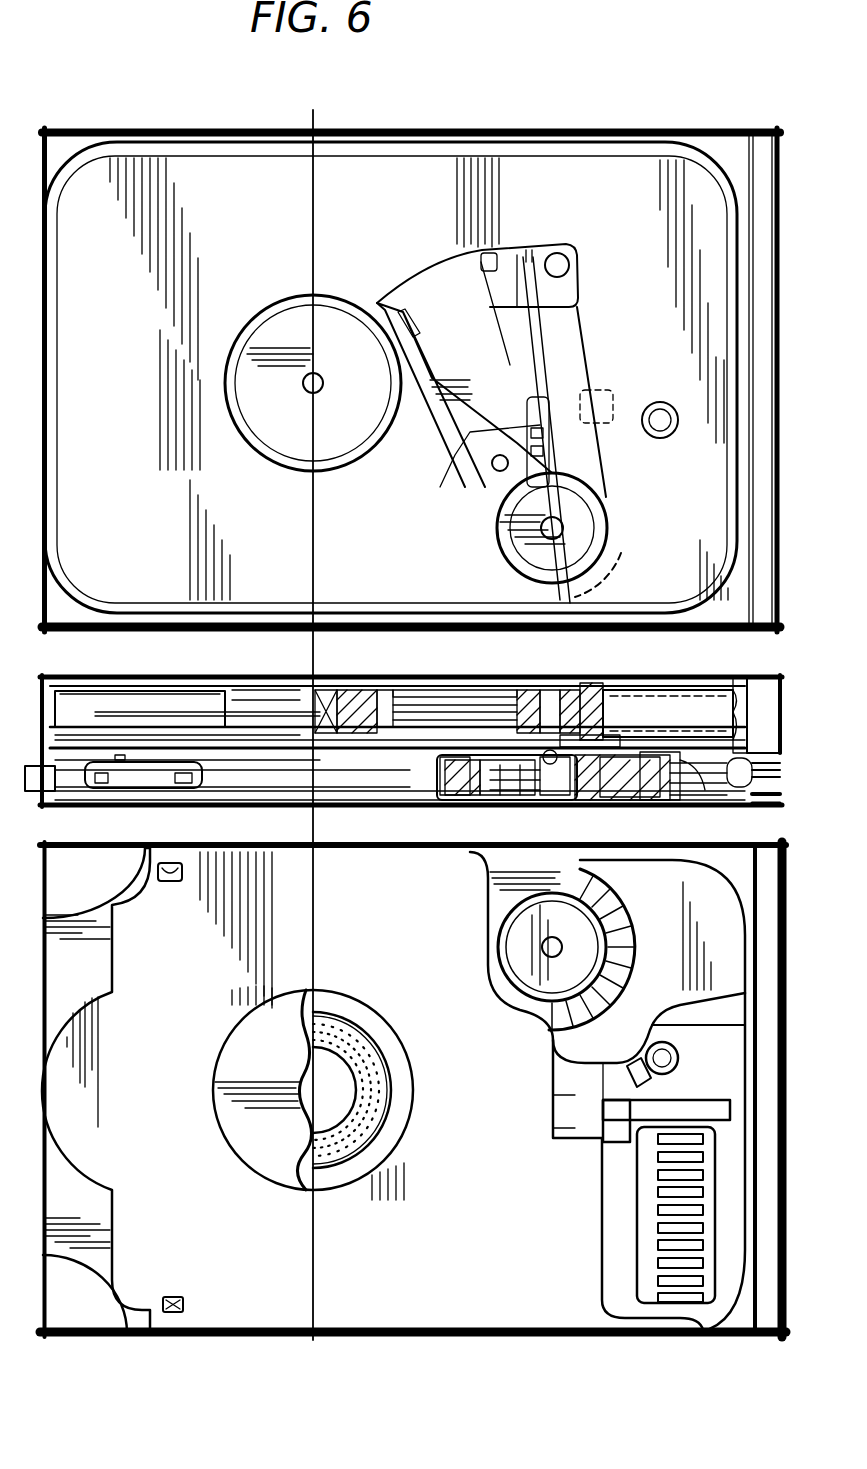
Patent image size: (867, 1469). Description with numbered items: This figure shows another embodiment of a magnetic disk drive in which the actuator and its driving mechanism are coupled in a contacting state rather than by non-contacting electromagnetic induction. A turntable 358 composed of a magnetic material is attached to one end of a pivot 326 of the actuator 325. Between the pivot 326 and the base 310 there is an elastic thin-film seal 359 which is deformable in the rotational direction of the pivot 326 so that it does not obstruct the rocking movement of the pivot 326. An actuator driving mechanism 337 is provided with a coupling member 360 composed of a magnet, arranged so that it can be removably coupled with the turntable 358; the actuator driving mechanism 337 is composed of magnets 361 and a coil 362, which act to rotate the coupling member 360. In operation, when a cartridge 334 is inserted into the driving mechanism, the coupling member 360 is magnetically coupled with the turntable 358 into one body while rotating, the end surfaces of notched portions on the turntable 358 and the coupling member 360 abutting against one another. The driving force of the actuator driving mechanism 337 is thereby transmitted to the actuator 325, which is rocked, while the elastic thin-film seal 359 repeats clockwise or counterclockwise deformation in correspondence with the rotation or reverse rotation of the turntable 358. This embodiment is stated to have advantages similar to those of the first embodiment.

The base 310 is at (745, 806).
The actuator 325 is at (442, 524).
The pivot 326 is at (556, 527).
The cartridge 334 is at (610, 178).
The actuator driving mechanism 337 is at (663, 806).
The turntable 358 is at (590, 740).
The elastic thin-film seal 359 is at (710, 806).
The coupling member 360 is at (492, 800).
The magnets 361 is at (428, 748).
The coil 362 is at (628, 806).